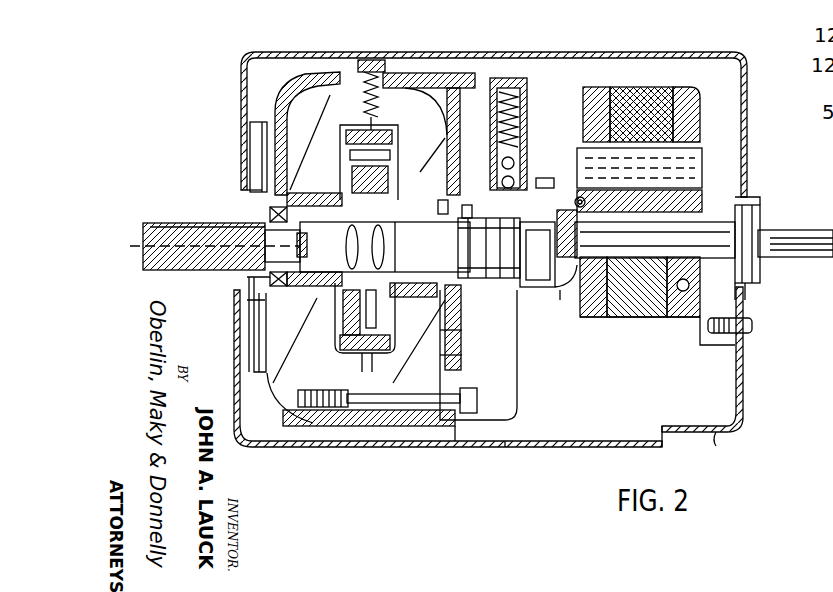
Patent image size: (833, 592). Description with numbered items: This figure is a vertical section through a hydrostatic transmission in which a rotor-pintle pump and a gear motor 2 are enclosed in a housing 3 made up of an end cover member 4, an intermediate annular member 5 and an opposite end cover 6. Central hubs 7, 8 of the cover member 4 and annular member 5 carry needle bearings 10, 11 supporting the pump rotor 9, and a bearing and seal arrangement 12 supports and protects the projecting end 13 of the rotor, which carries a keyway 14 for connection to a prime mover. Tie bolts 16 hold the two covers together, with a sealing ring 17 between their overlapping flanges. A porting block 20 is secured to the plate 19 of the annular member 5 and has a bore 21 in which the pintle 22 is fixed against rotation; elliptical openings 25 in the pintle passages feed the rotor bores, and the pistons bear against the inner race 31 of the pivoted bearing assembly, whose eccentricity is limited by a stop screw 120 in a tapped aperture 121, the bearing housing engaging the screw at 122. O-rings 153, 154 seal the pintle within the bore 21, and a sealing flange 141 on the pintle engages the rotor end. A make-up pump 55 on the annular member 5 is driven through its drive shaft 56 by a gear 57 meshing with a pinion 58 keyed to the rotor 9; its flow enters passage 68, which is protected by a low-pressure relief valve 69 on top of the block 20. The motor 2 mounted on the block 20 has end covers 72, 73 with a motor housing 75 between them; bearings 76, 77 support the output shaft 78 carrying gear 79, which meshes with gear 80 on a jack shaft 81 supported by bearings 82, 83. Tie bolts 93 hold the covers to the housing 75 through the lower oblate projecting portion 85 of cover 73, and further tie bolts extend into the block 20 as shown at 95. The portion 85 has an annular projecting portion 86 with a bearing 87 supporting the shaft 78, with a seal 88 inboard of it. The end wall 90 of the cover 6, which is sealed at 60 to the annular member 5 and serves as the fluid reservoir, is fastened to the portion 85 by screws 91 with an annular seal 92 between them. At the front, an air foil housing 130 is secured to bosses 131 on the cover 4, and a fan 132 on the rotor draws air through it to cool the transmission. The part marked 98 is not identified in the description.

The gear motor 2 is at (703, 93).
The housing 3 is at (368, 50).
The end cover member 4 is at (105, 268).
The intermediate annular member 5 is at (585, 62).
The opposite end cover 6 is at (716, 446).
The central hub 7 is at (300, 322).
The central hub 8 is at (386, 337).
The pump rotor 9 is at (233, 272).
The needle bearing 10 is at (337, 183).
The needle bearing 11 is at (443, 200).
The bearing and seal arrangement 12 is at (284, 207).
The projecting end of the rotor 13 is at (165, 272).
The keyway 14 is at (184, 217).
The tie bolts 16 is at (346, 428).
The sealing ring 17 is at (340, 92).
The plate 19 is at (437, 132).
The porting block 20 is at (548, 290).
The bore 21 is at (520, 300).
The pintle 22 is at (385, 247).
The elliptical openings 25 is at (354, 246).
The inner race 31 is at (340, 342).
The make-up pump 55 is at (512, 386).
The drive shaft 56 is at (455, 342).
The gear 57 is at (452, 362).
The pinion 58 is at (425, 253).
The seal 60 is at (459, 432).
The passage 68 is at (548, 178).
The relief valve 69 is at (538, 112).
The end cover 72 is at (600, 317).
The end cover 73 is at (681, 318).
The motor housing 75 is at (631, 318).
The bearing 76 is at (588, 270).
The bearing 77 is at (677, 268).
The output shaft 78 is at (776, 258).
The gear 79 is at (626, 270).
The gear 80 is at (648, 130).
The jack shaft 81 is at (639, 180).
The bearing 82 is at (590, 140).
The bearing 83 is at (697, 140).
The lower oblate projecting portion 85 is at (745, 300).
The annular projecting portion 86 is at (757, 206).
The roller or ball bearing 87 is at (760, 216).
The seal 88 is at (655, 240).
The end wall 90 is at (743, 381).
The screws 91 is at (757, 326).
The annular seal 92 is at (745, 345).
The tie bolts 93 is at (566, 300).
The tie bolt extension into block 95 is at (545, 165).
The pivot pin 98 is at (572, 204).
The stop screw 120 is at (382, 108).
The tapped aperture 121 is at (400, 68).
The stop screw engagement 122 is at (385, 122).
The air foil housing 130 is at (505, 455).
The bosses 131 is at (273, 113).
The fan or blower 132 is at (247, 190).
The sealing flange 141 is at (410, 246).
The O-ring 153 is at (472, 212).
The O-ring 154 is at (455, 318).